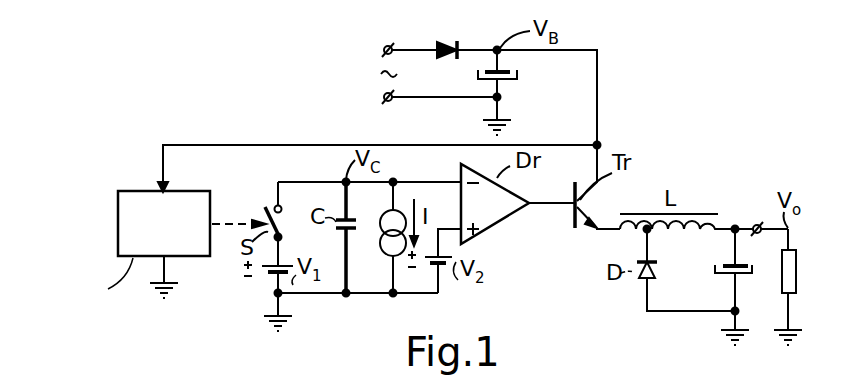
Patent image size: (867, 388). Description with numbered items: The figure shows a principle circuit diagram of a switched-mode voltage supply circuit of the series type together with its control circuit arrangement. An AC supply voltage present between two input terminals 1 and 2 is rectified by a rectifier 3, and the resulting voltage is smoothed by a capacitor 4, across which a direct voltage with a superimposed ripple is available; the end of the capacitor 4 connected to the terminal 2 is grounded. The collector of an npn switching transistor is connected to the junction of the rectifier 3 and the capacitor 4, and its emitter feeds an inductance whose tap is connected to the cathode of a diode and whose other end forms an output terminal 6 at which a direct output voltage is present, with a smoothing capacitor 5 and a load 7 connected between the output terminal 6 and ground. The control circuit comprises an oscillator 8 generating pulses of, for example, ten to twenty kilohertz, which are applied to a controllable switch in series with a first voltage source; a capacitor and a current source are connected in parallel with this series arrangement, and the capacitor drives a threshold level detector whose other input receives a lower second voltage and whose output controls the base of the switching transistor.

The input terminal 1 is at (389, 45).
The input terminal 2 is at (386, 103).
The rectifier 3 is at (446, 46).
The capacitor 4 is at (512, 82).
The smoothing capacitor 5 is at (722, 275).
The output terminal 6 is at (758, 221).
The load 7 is at (782, 276).
The oscillator 8 is at (118, 218).